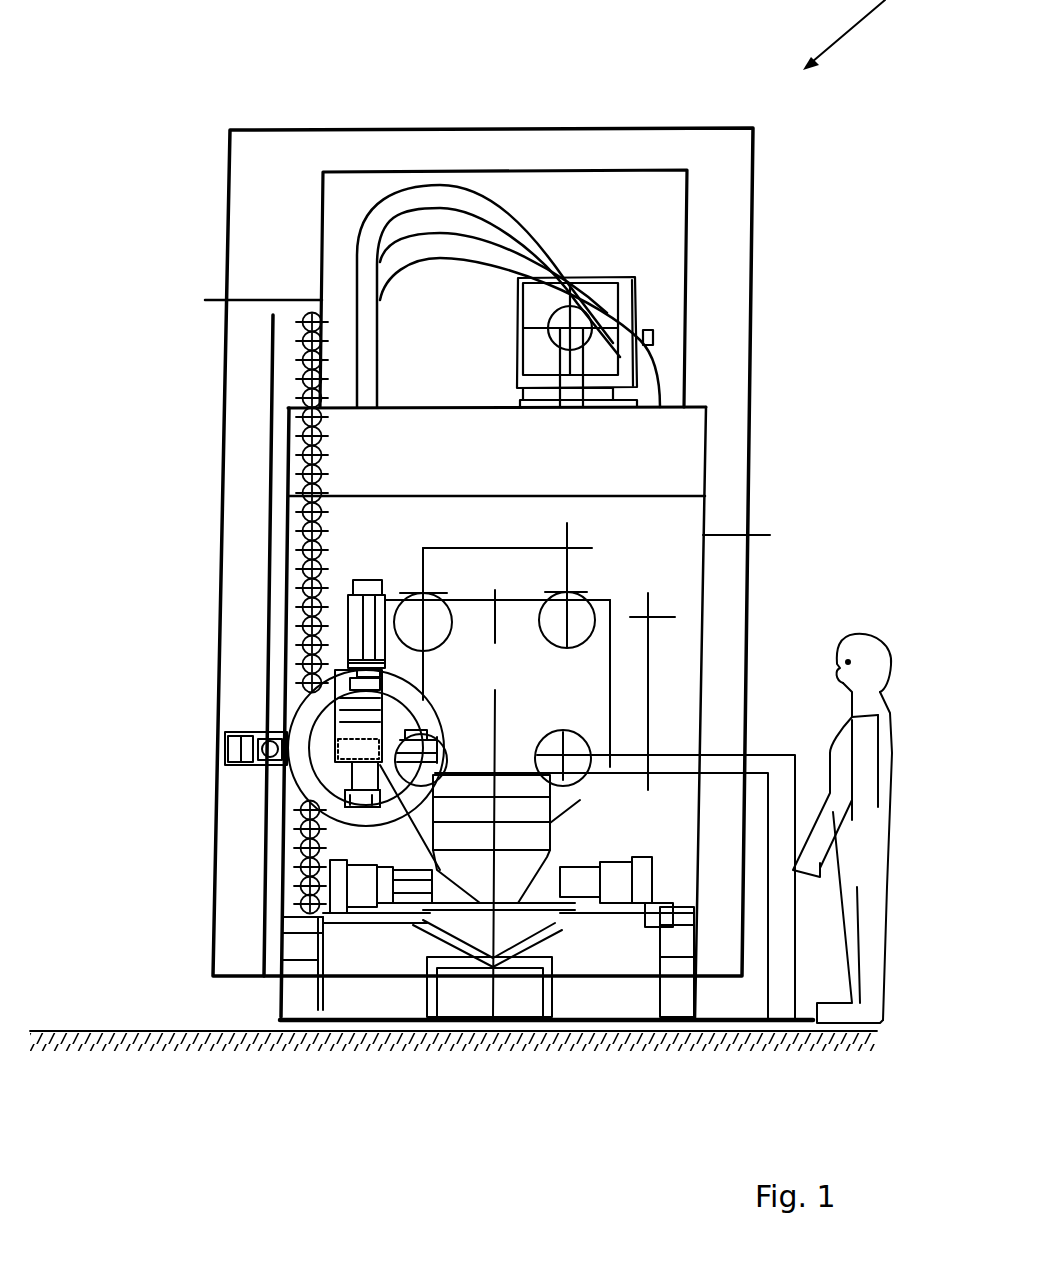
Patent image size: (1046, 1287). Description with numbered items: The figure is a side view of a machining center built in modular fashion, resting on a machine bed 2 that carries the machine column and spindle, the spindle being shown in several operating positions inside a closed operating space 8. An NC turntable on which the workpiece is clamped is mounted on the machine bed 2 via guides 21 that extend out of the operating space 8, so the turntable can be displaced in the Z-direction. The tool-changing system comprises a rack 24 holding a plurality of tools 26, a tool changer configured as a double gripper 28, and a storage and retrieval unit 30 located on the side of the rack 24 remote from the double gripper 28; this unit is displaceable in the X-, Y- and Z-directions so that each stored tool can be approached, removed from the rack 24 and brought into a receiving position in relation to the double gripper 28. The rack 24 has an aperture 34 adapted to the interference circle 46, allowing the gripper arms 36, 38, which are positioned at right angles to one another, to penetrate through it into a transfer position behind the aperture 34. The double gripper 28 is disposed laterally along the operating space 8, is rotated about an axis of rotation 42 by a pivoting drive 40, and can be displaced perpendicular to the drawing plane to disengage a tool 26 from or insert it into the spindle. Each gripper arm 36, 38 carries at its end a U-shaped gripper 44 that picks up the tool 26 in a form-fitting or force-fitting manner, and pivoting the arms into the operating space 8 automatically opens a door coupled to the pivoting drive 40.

The machine bed 2 is at (565, 990).
The operating space 8 is at (612, 663).
The guides 21 is at (667, 900).
The rack 24 is at (290, 357).
The tools 26 is at (330, 893).
The double gripper 28 is at (345, 795).
The storage and retrieval unit 30 is at (238, 724).
The aperture 34 is at (335, 688).
The gripper arm 36 is at (350, 795).
The gripper arm 38 is at (390, 785).
The pivoting drive 40 is at (348, 599).
The axis of rotation 42 is at (382, 723).
The U-shaped grippers 44 is at (427, 733).
The interference circle 46 is at (296, 768).